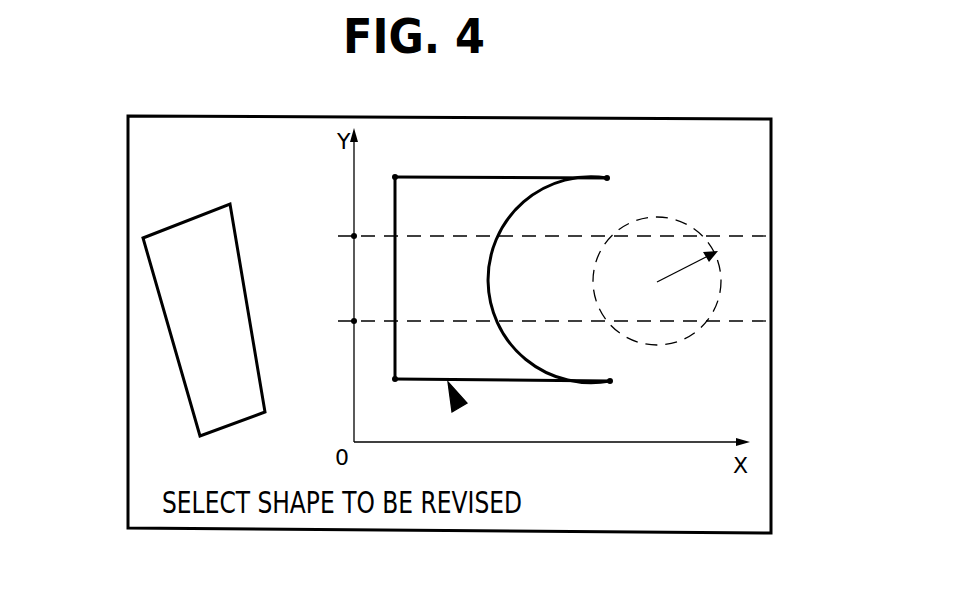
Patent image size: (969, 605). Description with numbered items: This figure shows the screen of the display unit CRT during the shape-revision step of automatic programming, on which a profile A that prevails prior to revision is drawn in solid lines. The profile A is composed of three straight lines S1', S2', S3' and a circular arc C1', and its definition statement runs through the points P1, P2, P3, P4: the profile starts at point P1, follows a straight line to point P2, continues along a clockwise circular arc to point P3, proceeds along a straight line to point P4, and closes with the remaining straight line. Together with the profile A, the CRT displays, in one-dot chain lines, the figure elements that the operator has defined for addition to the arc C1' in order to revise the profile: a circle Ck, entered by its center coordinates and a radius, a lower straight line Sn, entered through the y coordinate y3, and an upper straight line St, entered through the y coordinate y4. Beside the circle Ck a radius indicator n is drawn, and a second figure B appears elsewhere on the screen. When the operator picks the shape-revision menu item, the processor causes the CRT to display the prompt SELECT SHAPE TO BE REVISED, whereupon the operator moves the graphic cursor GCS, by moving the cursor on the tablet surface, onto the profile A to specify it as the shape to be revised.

The display unit CRT is at (128, 445).
The second graphic shape B is at (163, 313).
The profile A is at (503, 332).
The straight line S1' is at (341, 278).
The straight line S2' is at (557, 482).
The straight line S3' is at (491, 129).
The circular arc C1' is at (549, 280).
The point P1 is at (390, 395).
The point P2 is at (623, 397).
The point P3 is at (625, 165).
The point P4 is at (390, 163).
The y coordinate y4 is at (557, 243).
The y coordinate y3 is at (561, 350).
The straight line St is at (733, 240).
The straight line Sn is at (735, 325).
The circle Ck is at (709, 281).
The radius vector of circle Ck n is at (687, 264).
The graphic cursor GCS is at (467, 403).